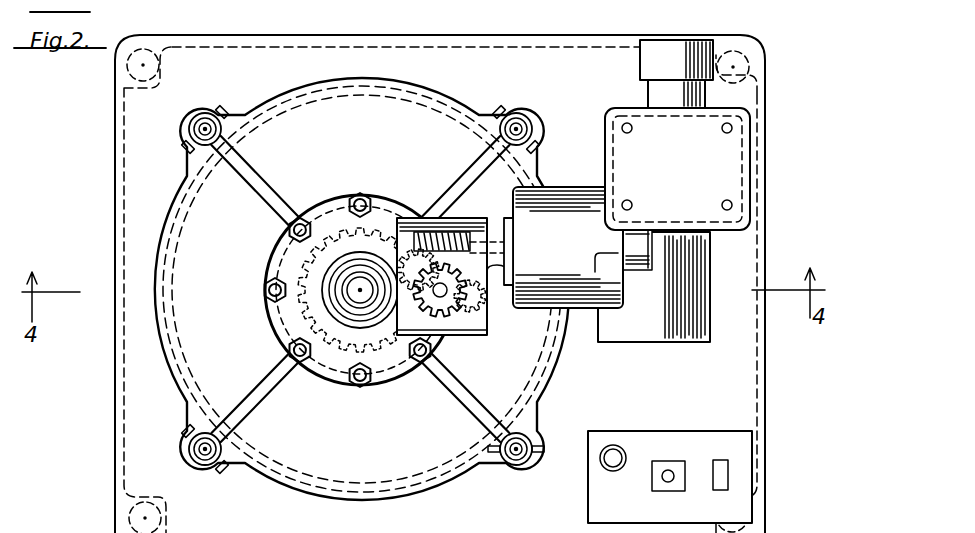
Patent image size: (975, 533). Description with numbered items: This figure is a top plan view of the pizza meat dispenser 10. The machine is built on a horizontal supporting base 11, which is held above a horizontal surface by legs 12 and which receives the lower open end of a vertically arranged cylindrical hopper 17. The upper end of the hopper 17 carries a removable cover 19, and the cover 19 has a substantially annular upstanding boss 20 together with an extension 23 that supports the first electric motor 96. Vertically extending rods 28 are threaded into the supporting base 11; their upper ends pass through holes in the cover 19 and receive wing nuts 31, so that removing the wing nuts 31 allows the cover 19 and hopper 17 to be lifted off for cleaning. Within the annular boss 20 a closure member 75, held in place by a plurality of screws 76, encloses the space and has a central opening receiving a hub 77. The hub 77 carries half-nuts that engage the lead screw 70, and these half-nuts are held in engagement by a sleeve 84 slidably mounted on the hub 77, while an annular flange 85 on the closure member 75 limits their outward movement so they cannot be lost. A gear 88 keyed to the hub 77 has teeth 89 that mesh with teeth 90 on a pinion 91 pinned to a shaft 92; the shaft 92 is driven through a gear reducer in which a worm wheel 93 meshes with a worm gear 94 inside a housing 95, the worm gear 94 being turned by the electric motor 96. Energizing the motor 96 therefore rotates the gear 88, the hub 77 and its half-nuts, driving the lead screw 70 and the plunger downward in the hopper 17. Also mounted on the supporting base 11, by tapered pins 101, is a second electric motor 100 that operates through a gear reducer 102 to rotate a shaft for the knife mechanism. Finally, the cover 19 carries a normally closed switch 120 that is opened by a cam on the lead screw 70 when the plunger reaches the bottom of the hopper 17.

The pizza meat dispenser 10 is at (778, 66).
The supporting base 11 is at (138, 396).
The legs 12 is at (112, 80).
The cylindrical hopper 17 is at (172, 232).
The cover 19 is at (185, 266).
The annular upstanding boss 20 is at (266, 316).
The extension 23 is at (572, 312).
The rods 28 is at (205, 113).
The wing nuts 31 is at (186, 143).
The lead screw 70 is at (368, 193).
The closure member 75 is at (288, 258).
The screws 76 is at (302, 217).
The hub 77 is at (316, 364).
The sleeve 84 is at (352, 325).
The annular flange 85 is at (290, 278).
The gear 88 is at (300, 250).
The teeth 89 is at (368, 275).
The teeth 90 is at (433, 372).
The pinion 91 is at (502, 297).
The shaft 92 is at (440, 292).
The worm wheel 93 is at (488, 305).
The worm gear 94 is at (464, 232).
The housing 95 is at (478, 330).
The first electric motor 96 is at (553, 188).
The second electric motor 100 is at (760, 170).
The tapered pins 101 is at (622, 112).
The gear reducer 102 is at (686, 344).
The switch 120 is at (650, 432).